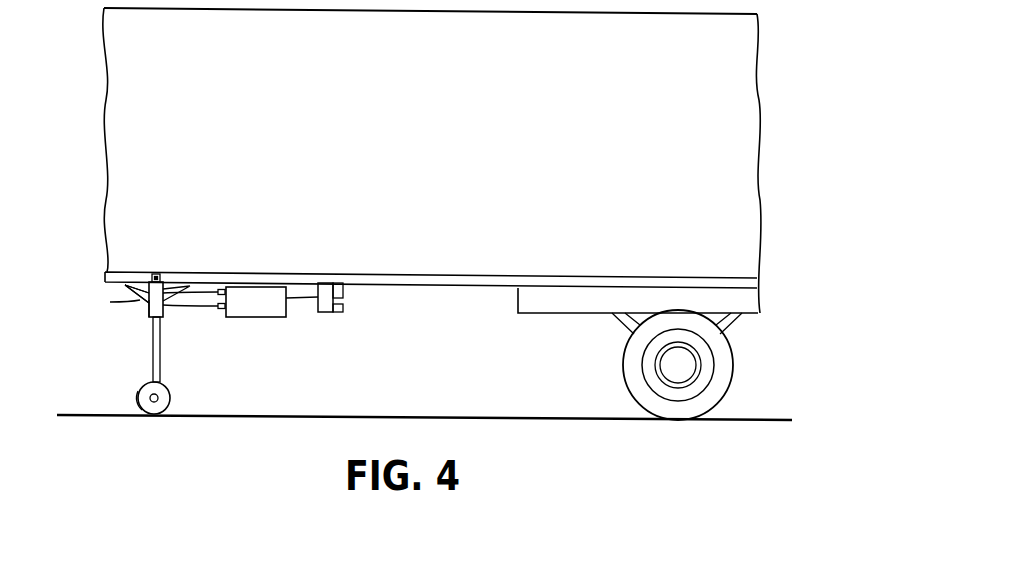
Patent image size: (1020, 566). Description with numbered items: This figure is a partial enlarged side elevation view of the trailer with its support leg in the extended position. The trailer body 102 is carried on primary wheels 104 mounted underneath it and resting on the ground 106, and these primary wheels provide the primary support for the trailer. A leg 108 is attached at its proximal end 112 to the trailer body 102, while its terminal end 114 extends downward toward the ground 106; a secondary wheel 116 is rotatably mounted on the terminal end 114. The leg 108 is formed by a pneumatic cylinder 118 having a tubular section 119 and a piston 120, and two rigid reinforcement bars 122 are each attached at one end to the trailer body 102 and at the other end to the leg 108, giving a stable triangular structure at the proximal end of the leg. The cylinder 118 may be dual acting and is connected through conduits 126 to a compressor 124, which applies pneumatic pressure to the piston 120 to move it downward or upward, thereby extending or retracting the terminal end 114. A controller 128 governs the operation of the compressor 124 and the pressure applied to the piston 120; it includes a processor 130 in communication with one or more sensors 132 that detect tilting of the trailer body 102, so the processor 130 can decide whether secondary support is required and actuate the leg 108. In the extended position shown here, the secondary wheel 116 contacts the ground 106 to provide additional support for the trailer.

The trailer body 102 is at (683, 275).
The primary wheels 104 is at (622, 364).
The ground 106 is at (487, 416).
The leg 108 is at (177, 332).
The proximal end 112 is at (154, 273).
The terminal end 114 is at (158, 398).
The secondary wheel 116 is at (138, 391).
The pneumatic cylinder 118 is at (129, 340).
The tubular section 119 is at (150, 312).
The piston 120 is at (150, 355).
The rigid reinforcement bars 122 is at (140, 299).
The compressor 124 is at (265, 286).
The conduits 126 is at (212, 290).
The controller 128 is at (326, 283).
The processor 130 is at (340, 283).
The sensors 132 is at (343, 306).